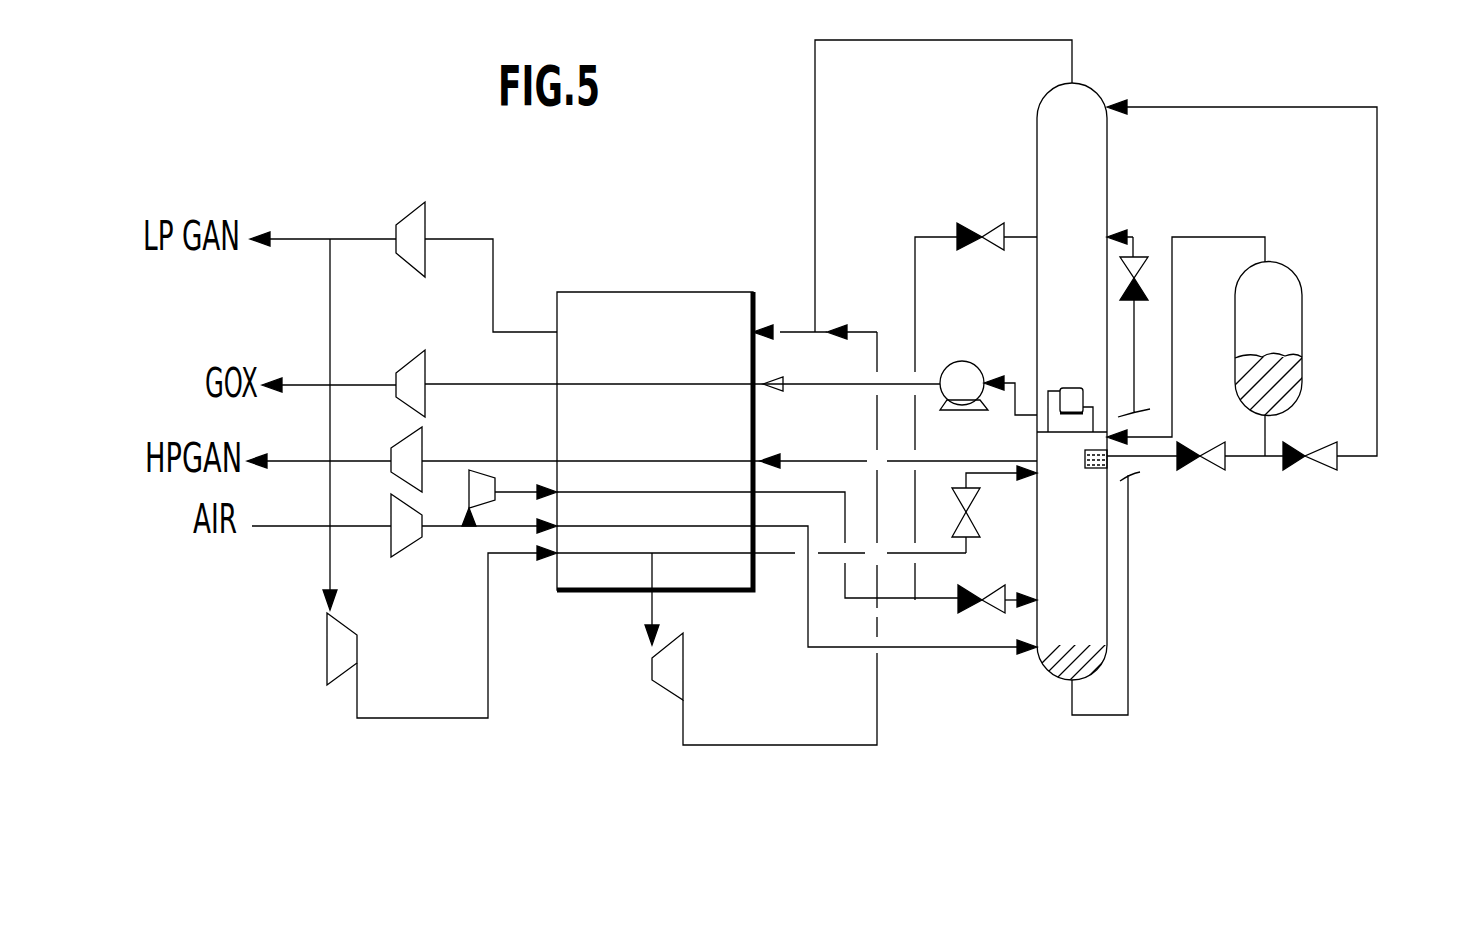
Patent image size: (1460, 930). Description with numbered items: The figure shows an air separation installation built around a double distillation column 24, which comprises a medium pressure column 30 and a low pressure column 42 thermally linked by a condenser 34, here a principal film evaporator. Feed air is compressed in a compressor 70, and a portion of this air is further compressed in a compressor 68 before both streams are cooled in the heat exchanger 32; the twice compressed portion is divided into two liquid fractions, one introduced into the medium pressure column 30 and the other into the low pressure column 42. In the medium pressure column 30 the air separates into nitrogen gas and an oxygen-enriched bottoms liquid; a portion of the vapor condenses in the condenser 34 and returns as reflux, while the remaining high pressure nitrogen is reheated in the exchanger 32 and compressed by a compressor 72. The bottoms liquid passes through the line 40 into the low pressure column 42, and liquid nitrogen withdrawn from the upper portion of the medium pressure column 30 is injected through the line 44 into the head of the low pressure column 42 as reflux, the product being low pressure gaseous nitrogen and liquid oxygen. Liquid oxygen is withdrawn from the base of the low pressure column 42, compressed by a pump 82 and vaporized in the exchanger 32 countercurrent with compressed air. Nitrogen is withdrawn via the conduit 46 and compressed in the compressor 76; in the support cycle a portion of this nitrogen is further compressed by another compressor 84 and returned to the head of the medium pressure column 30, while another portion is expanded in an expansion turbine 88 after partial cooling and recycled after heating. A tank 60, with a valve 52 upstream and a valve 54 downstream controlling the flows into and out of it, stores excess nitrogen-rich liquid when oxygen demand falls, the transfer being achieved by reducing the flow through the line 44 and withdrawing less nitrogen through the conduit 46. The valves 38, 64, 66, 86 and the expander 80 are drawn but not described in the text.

The double distillation column 24 is at (1056, 407).
The medium pressure column 30 is at (1048, 670).
The heat exchanger 32 is at (685, 292).
The condenser 34 is at (1070, 395).
The expansion valve 38 is at (1148, 293).
The line 40 is at (1130, 600).
The low pressure column 42 is at (1110, 178).
The line 44 is at (1378, 253).
The conduit 46 is at (987, 40).
The valve 52 is at (1188, 472).
The valve 54 is at (1300, 472).
The tank 60 is at (1302, 275).
The valve 64 is at (972, 246).
The valve 66 is at (965, 604).
The compressor 68 is at (482, 507).
The compressor 70 is at (415, 555).
The compressor 72 is at (425, 446).
The compressor 76 is at (443, 201).
The expansion turbine 80 is at (427, 370).
The pump 82 is at (980, 360).
The compressor 84 is at (323, 656).
The valve 86 is at (1000, 505).
The expansion turbine 88 is at (687, 653).